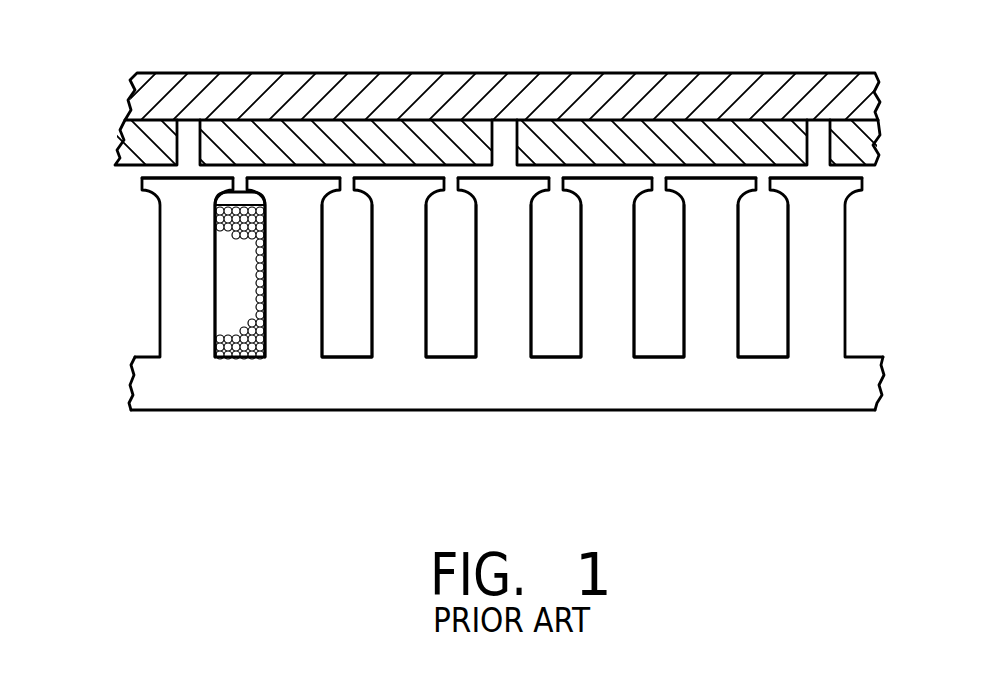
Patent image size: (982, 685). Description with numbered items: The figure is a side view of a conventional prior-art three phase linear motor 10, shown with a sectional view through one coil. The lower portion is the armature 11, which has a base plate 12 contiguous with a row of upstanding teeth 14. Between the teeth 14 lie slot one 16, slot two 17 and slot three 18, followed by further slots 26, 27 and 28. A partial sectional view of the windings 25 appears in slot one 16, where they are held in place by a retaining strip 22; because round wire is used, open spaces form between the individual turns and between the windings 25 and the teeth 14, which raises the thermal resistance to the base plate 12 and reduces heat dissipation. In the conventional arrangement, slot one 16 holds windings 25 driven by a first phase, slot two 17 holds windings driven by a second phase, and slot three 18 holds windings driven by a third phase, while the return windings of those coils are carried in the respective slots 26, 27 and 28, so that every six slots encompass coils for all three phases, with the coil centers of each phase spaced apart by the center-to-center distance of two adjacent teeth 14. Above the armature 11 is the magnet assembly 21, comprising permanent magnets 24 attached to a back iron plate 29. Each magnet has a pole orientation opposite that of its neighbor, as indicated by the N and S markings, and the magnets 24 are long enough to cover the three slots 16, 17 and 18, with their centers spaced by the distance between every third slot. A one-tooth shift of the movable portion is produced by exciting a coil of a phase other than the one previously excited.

The three phase linear motor 10 is at (104, 142).
The armature 11 is at (629, 412).
The base plate 12 is at (183, 395).
The teeth 14 is at (497, 322).
The slot one 16 is at (225, 293).
The slot two 17 is at (331, 283).
The slot three 18 is at (435, 283).
The magnet assembly 21 is at (618, 72).
The retaining strip 22 is at (215, 208).
The permanent magnets 24 is at (550, 125).
The windings 25 is at (233, 342).
The slot 26 is at (540, 283).
The slot 27 is at (643, 283).
The slot 28 is at (747, 283).
The back iron plate 29 is at (185, 80).